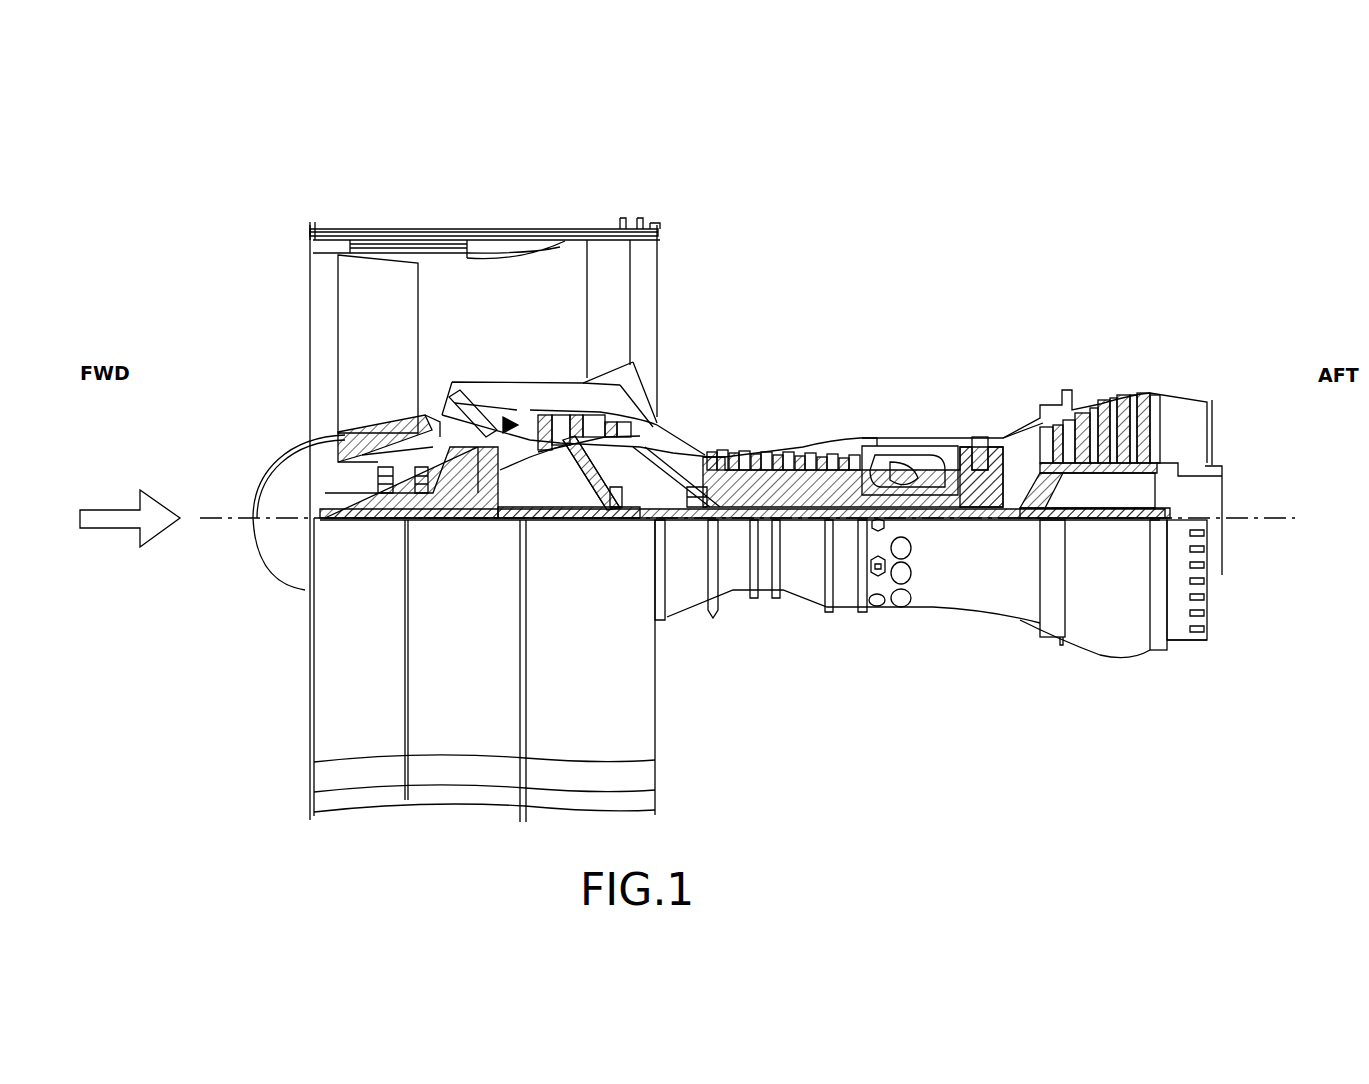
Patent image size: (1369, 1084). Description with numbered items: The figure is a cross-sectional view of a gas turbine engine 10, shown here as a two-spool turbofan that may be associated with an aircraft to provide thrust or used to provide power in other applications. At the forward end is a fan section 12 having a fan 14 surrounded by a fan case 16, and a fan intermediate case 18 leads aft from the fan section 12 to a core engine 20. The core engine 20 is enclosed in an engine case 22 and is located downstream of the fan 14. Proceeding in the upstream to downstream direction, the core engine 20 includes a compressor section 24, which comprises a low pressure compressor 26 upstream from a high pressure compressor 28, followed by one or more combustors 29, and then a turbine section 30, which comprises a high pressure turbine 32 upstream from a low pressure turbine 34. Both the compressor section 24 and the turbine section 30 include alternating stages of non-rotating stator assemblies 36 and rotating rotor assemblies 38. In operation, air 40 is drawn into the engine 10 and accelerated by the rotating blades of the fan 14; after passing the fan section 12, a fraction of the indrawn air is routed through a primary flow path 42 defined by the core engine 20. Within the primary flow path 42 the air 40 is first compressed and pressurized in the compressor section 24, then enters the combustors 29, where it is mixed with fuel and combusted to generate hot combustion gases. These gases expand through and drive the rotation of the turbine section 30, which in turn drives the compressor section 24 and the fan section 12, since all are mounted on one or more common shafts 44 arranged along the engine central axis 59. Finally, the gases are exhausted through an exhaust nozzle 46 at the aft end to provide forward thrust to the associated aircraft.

The gas turbine engine 10 is at (1193, 259).
The fan section 12 is at (434, 214).
The fan 14 is at (357, 328).
The fan case 16 is at (638, 752).
The fan intermediate case 18 is at (484, 432).
The core engine 20 is at (899, 373).
The engine case 22 is at (999, 590).
The compressor section 24 is at (700, 403).
The low pressure compressor (LPC) 26 is at (606, 402).
The high pressure compressor (HPC) 28 is at (806, 450).
The combustor 29 is at (912, 460).
The turbine section 30 is at (1066, 372).
The high pressure turbine 32 is at (976, 438).
The low pressure turbine 34 is at (1098, 400).
The stator assembly 36 is at (556, 430).
The rotor assembly 38 is at (750, 462).
The air 40 is at (116, 508).
The primary flow path 42 is at (456, 420).
The common shaft 44 is at (686, 530).
The exhaust nozzle 46 is at (1144, 393).
The engine central axis 59 is at (1248, 518).